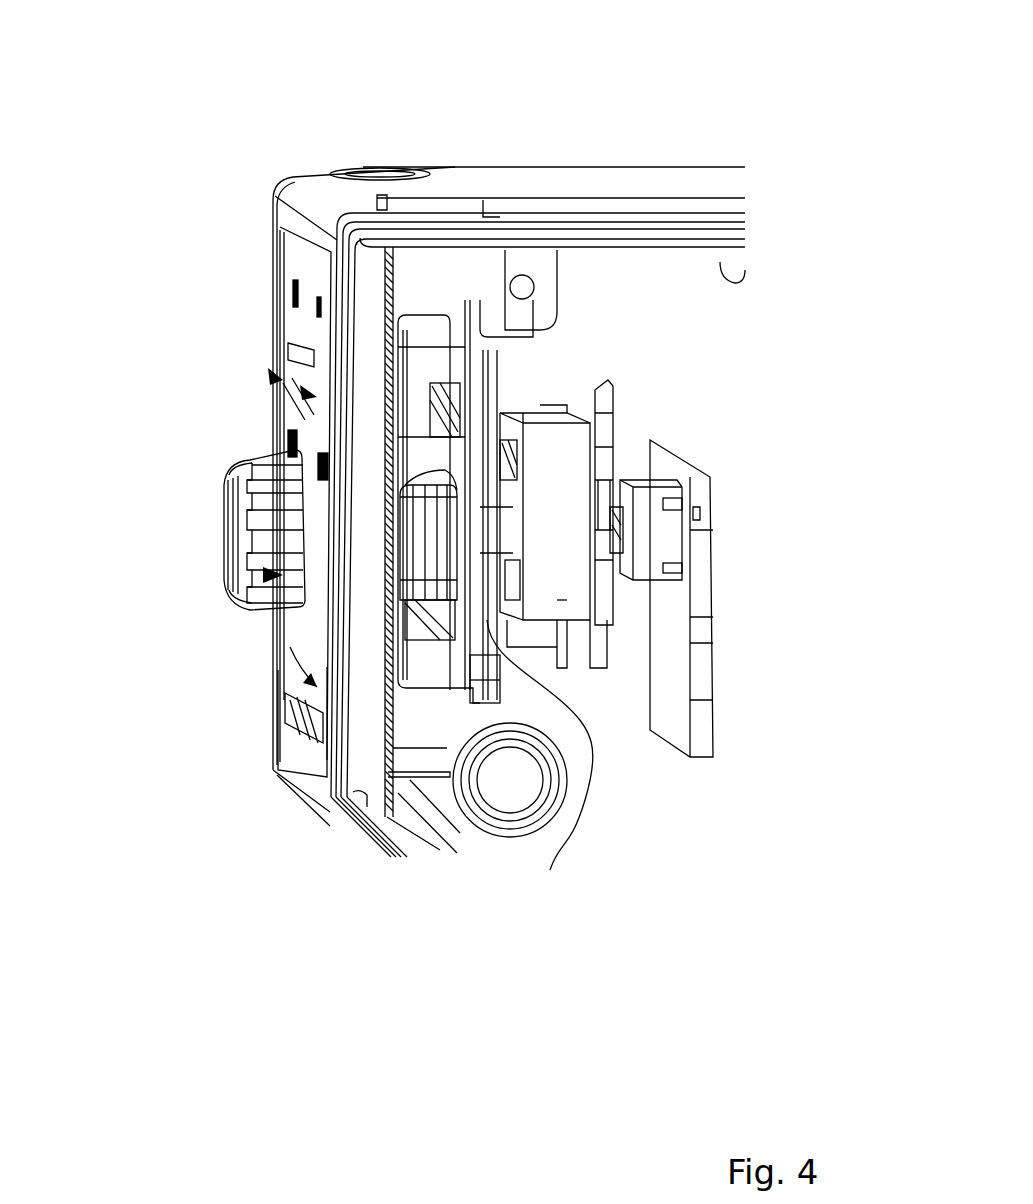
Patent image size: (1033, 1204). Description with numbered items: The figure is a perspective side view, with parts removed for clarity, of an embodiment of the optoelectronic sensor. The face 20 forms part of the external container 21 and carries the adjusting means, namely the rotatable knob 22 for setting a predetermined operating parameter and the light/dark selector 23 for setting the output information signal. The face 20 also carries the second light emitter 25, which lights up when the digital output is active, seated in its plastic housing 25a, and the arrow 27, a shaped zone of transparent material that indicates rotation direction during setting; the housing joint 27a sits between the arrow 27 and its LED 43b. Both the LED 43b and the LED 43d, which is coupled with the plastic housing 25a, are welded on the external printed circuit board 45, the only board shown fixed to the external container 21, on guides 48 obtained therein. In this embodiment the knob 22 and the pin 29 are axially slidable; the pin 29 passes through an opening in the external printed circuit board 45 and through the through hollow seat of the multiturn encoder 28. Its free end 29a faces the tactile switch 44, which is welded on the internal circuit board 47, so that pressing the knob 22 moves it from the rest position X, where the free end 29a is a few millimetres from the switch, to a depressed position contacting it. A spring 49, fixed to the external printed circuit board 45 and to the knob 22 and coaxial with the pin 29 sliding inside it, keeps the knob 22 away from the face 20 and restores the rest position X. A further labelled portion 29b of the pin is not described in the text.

The face 20 is at (268, 654).
The external container 21 is at (712, 178).
The knob 22 is at (224, 588).
The light/dark selector 23 is at (265, 366).
The second light emitter 25 is at (318, 362).
The plastic housing 25a is at (412, 397).
The arrow 27 is at (325, 773).
The housing joint 27a is at (412, 638).
The multiturn encoder 28 is at (570, 603).
The pin 29 is at (492, 500).
The free end 29a is at (613, 480).
The slider foot 29b is at (598, 695).
The LED for PCB mounting 43b is at (447, 633).
The LED for PCB mounting 43d is at (432, 490).
The tactile switch 44 is at (658, 542).
The external printed circuit board 45 is at (533, 283).
The internal circuit board 47 is at (663, 650).
The guides 48 is at (482, 305).
The spring 49 is at (530, 390).
The rest position X is at (200, 470).